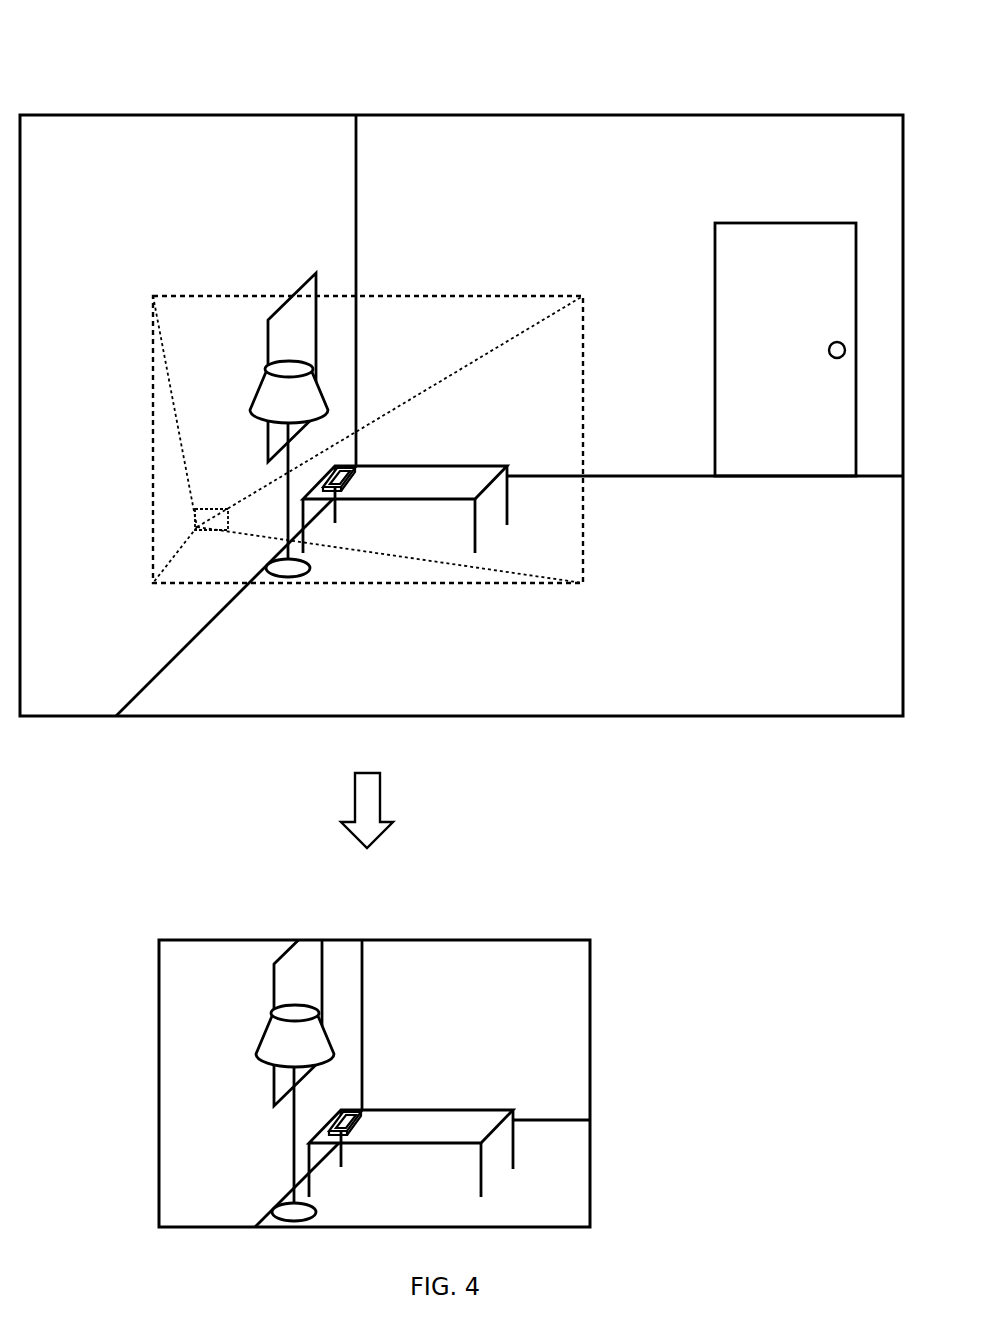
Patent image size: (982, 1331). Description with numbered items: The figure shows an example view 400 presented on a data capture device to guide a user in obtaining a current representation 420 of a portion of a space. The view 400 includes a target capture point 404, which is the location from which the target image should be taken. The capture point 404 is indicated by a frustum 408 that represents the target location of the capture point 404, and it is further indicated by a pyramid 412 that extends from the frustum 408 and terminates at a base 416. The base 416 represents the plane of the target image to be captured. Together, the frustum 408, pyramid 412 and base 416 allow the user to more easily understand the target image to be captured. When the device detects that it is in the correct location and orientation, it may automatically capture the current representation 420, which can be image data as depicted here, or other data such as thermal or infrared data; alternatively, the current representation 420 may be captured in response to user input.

The view 400 is at (158, 97).
The target capture point 404 is at (180, 530).
The frustum 408 is at (208, 530).
The pyramid 412 is at (438, 562).
The base 416 is at (250, 295).
The current representation 420 is at (257, 940).